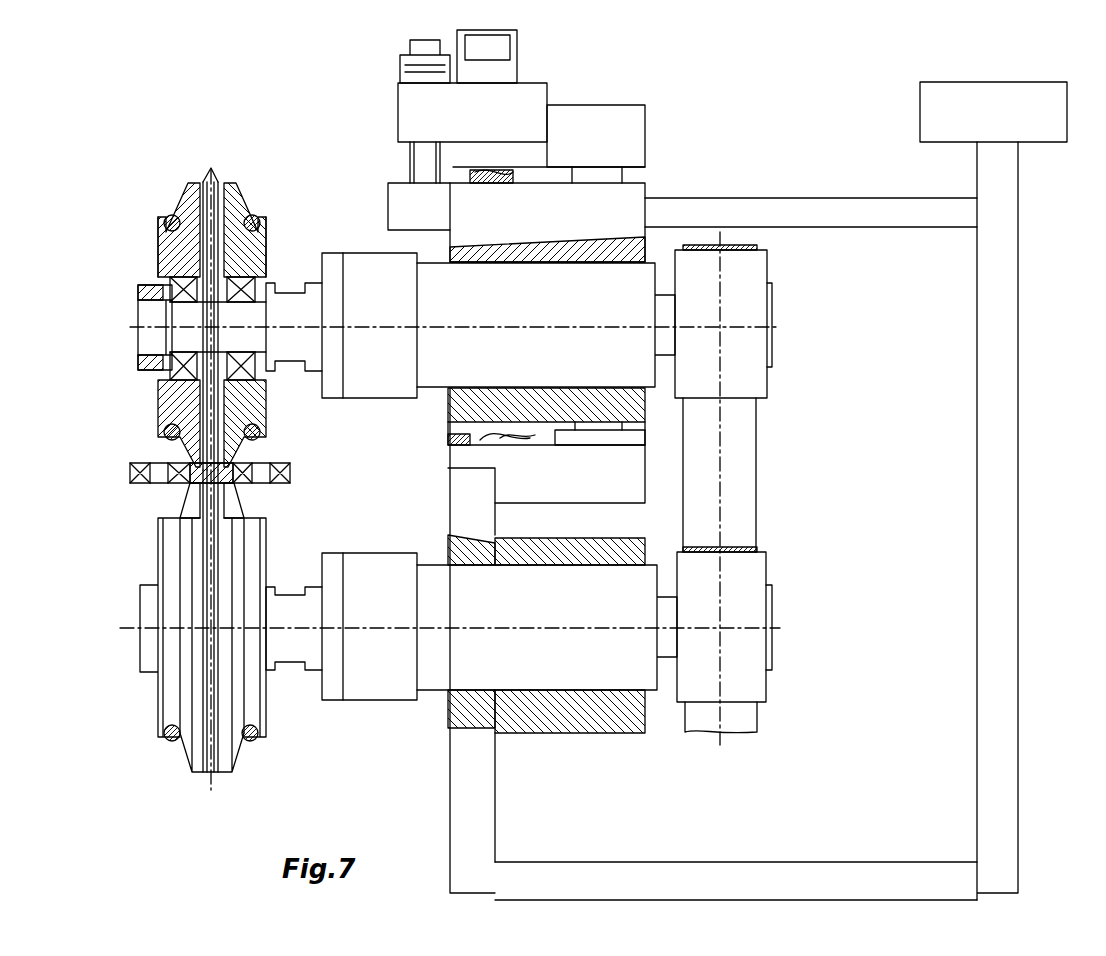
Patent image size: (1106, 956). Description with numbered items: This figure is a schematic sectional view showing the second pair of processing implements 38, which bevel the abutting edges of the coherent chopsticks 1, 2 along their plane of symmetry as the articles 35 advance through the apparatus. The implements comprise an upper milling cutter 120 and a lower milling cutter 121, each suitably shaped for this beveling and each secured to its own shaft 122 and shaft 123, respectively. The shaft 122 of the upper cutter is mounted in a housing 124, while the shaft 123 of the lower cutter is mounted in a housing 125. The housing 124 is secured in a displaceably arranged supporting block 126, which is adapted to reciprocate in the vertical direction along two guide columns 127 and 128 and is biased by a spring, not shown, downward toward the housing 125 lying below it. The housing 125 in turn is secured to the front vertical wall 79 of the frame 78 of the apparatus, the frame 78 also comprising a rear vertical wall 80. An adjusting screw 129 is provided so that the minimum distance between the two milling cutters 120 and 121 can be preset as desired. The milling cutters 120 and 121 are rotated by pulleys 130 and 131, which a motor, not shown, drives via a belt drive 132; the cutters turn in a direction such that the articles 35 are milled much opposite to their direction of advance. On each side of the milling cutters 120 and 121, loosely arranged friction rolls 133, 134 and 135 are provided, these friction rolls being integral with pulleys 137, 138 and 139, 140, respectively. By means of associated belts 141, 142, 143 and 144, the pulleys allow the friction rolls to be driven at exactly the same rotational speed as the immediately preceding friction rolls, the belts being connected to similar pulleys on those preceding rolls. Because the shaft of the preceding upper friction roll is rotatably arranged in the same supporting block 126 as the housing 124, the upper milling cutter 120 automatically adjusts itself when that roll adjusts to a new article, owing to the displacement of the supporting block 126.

The coherent chopstick 1 is at (182, 498).
The coherent chopstick 2 is at (238, 490).
The article 35 is at (190, 460).
The second pair of processing implements 38 is at (194, 184).
The frame 78 is at (497, 835).
The front vertical wall 79 is at (470, 800).
The rear vertical wall 80 is at (1000, 763).
The upper milling cutter 120 is at (222, 186).
The lower milling cutter 121 is at (226, 760).
The shaft 122 is at (246, 340).
The shaft 123 is at (672, 650).
The housing 124 is at (438, 372).
The housing 125 is at (440, 680).
The supporting block 126 is at (622, 215).
The guide column 127 is at (250, 566).
The guide column 128 is at (598, 176).
The adjusting screw 129 is at (430, 170).
The pulley 130 is at (740, 297).
The pulley 131 is at (740, 600).
The belt drive 132 is at (735, 470).
The friction roll 133 is at (178, 262).
The friction roll 134 is at (246, 262).
The friction roll 135 is at (188, 742).
The pulley 137 is at (159, 232).
The pulley 138 is at (265, 234).
The pulley 139 is at (172, 702).
The pulley 140 is at (245, 702).
The belt 141 is at (168, 218).
The belt 142 is at (255, 217).
The belt 143 is at (172, 740).
The belt 144 is at (250, 742).